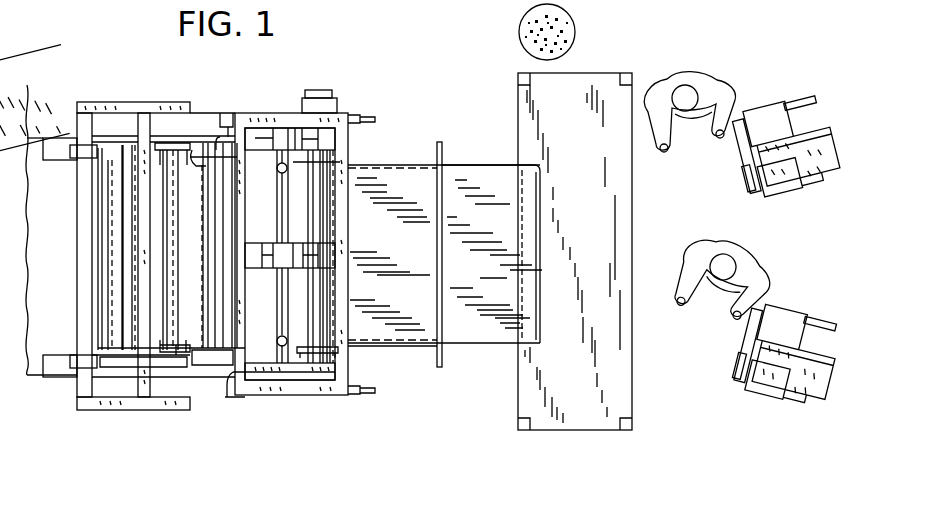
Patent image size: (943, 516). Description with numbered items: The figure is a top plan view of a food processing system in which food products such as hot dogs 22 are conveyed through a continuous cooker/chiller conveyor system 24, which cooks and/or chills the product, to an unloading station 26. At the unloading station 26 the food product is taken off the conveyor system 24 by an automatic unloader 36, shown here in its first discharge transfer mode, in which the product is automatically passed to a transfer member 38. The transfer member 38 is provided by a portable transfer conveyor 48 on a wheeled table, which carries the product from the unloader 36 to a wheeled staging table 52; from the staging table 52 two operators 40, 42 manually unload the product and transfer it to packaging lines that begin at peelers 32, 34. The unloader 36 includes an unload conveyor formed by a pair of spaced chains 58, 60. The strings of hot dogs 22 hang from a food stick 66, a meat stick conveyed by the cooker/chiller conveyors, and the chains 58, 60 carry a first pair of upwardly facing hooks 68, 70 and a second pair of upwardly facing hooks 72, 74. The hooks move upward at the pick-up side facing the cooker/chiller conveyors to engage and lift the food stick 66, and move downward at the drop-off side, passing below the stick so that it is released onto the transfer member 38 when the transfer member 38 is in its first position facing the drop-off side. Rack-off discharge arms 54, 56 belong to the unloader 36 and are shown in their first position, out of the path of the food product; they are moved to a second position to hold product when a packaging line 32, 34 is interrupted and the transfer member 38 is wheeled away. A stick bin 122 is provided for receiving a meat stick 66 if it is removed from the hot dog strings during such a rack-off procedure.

The hot dogs 22 is at (476, 178).
The continuous cooker/chiller conveyor system 24 is at (149, 100).
The unloading station 26 is at (407, 158).
The peeler 32 is at (742, 200).
The peeler 34 is at (741, 387).
The automatic unloader 36 is at (285, 108).
The transfer member 38 is at (418, 354).
The operator 40 is at (703, 78).
The operator 42 is at (760, 258).
The portable transfer conveyor 48 is at (402, 317).
The wheeled staging table 52 is at (580, 431).
The rack-off discharge arm 54 is at (280, 203).
The rack-off discharge arm 56 is at (283, 300).
The chain 58 is at (232, 125).
The chain 60 is at (233, 384).
The food stick 66 is at (441, 365).
The upwardly facing hook 68 is at (198, 138).
The upwardly facing hook 70 is at (187, 352).
The upwardly facing hook 72 is at (335, 172).
The upwardly facing hook 74 is at (302, 365).
The stick bin 122 is at (576, 36).